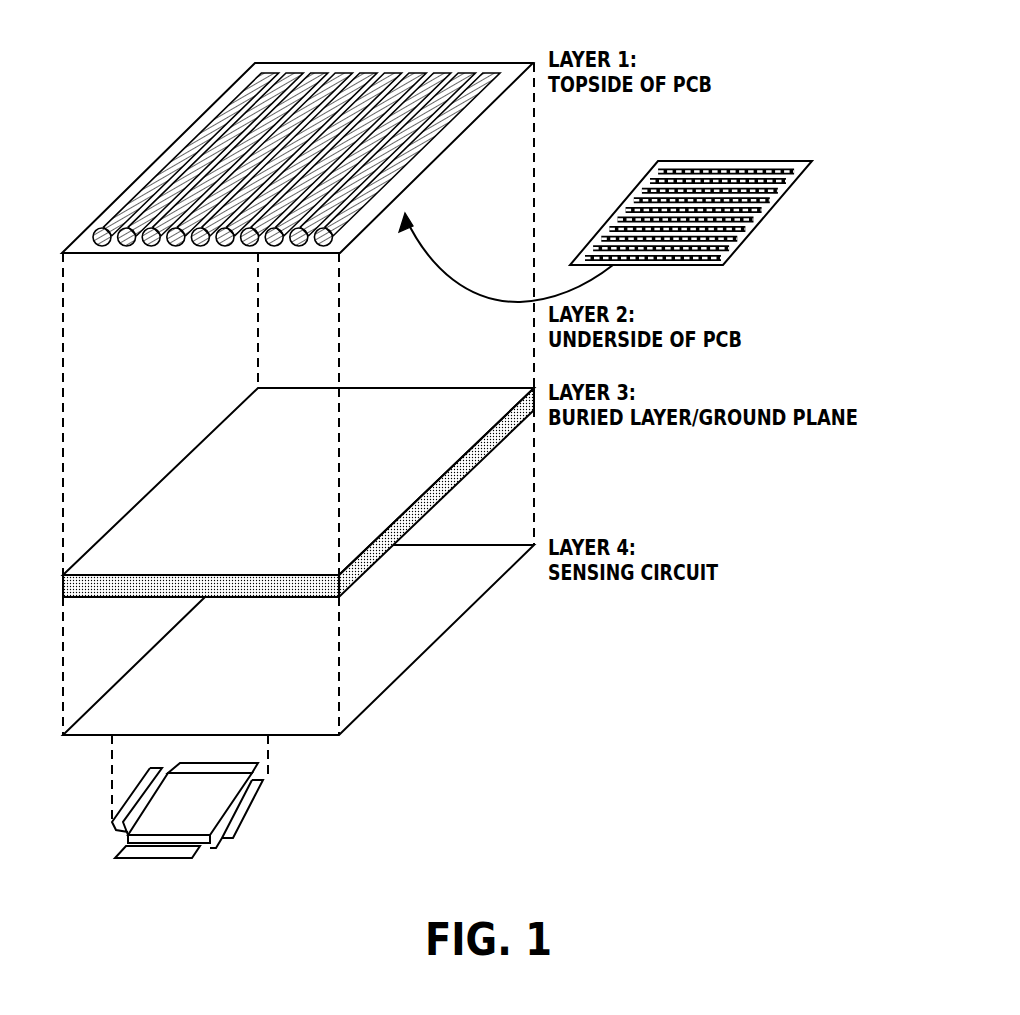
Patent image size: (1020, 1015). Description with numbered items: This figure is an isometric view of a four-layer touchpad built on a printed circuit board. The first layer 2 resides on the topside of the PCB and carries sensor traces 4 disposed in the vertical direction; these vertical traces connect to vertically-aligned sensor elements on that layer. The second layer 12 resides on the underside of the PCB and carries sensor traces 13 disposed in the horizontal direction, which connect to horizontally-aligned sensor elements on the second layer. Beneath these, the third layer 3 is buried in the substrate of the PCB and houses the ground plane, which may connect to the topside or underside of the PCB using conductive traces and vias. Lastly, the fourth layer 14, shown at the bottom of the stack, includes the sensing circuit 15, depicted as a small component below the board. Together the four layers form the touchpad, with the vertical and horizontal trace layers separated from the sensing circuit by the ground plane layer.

The first layer 2 is at (300, 62).
The sensor traces 4 is at (230, 113).
The second layer 12 is at (738, 160).
The sensor traces 13 is at (647, 177).
The third layer 3 is at (493, 388).
The fourth layer 14 is at (493, 545).
The sensing circuit 15 is at (217, 851).